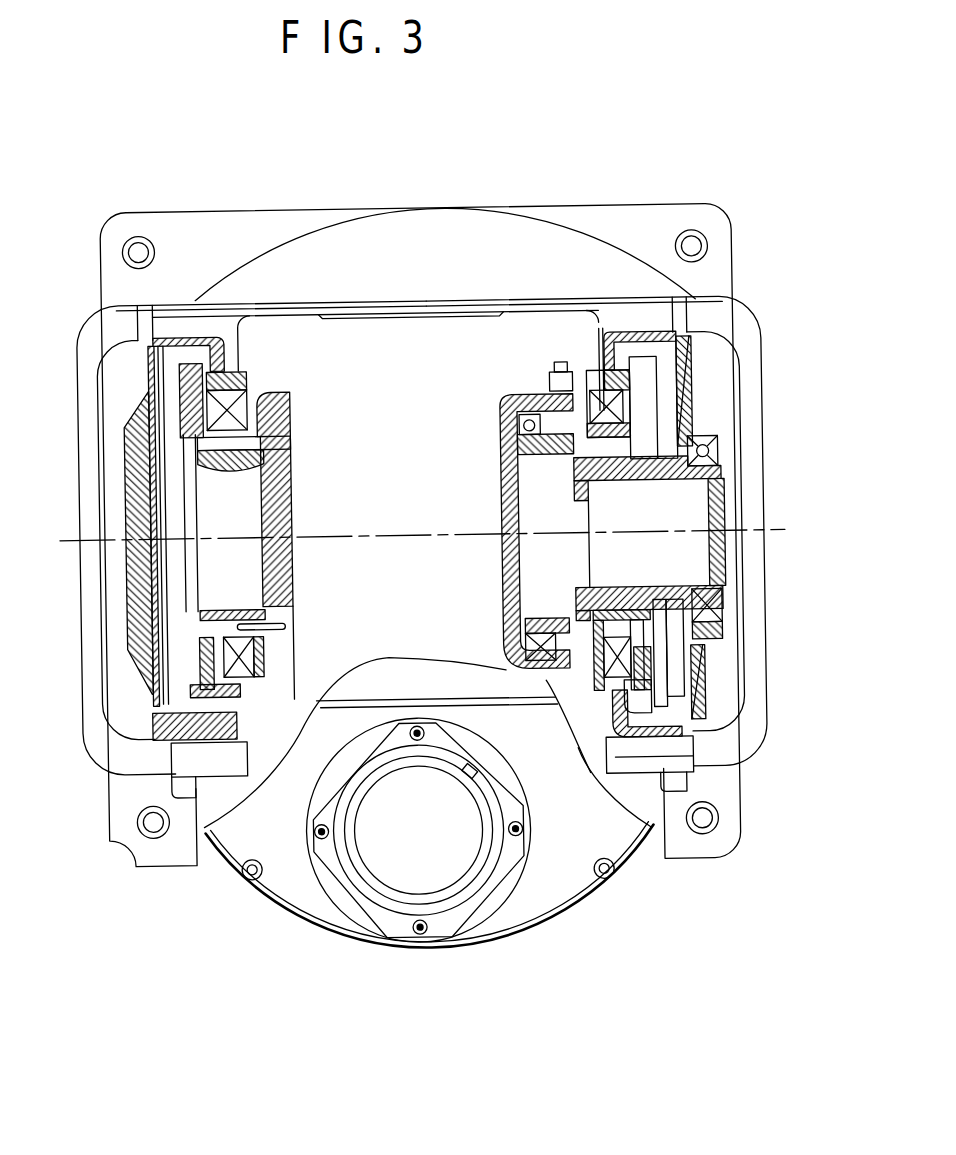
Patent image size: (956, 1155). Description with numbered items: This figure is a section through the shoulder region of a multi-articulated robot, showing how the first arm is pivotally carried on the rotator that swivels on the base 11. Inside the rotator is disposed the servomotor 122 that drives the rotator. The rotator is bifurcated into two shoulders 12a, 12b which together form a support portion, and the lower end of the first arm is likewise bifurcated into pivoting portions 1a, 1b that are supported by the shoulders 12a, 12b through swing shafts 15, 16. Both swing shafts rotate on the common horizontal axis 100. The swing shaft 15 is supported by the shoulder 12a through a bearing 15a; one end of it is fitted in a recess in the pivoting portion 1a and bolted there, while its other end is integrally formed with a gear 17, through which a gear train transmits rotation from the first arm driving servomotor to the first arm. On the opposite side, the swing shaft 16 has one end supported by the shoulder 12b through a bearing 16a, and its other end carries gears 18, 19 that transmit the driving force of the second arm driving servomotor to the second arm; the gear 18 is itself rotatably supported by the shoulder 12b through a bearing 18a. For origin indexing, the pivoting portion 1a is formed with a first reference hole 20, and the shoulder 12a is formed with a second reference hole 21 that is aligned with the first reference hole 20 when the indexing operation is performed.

The base 11 is at (727, 792).
The shoulder 12a is at (92, 430).
The shoulder 12b is at (750, 413).
The pivoting portion 1a is at (272, 413).
The pivoting portion 1b is at (524, 398).
The swing shaft 15 is at (232, 468).
The bearing 15a is at (248, 386).
The swing shaft 16 is at (590, 468).
The bearing 16a is at (695, 447).
The gear 17 is at (200, 693).
The gear 18 is at (667, 695).
The bearing 18a is at (592, 370).
The gear 19 is at (523, 443).
The first reference hole 20 is at (210, 733).
The second reference hole 21 is at (190, 722).
The horizontal axis 100 is at (780, 528).
The servomotor 122 is at (467, 863).